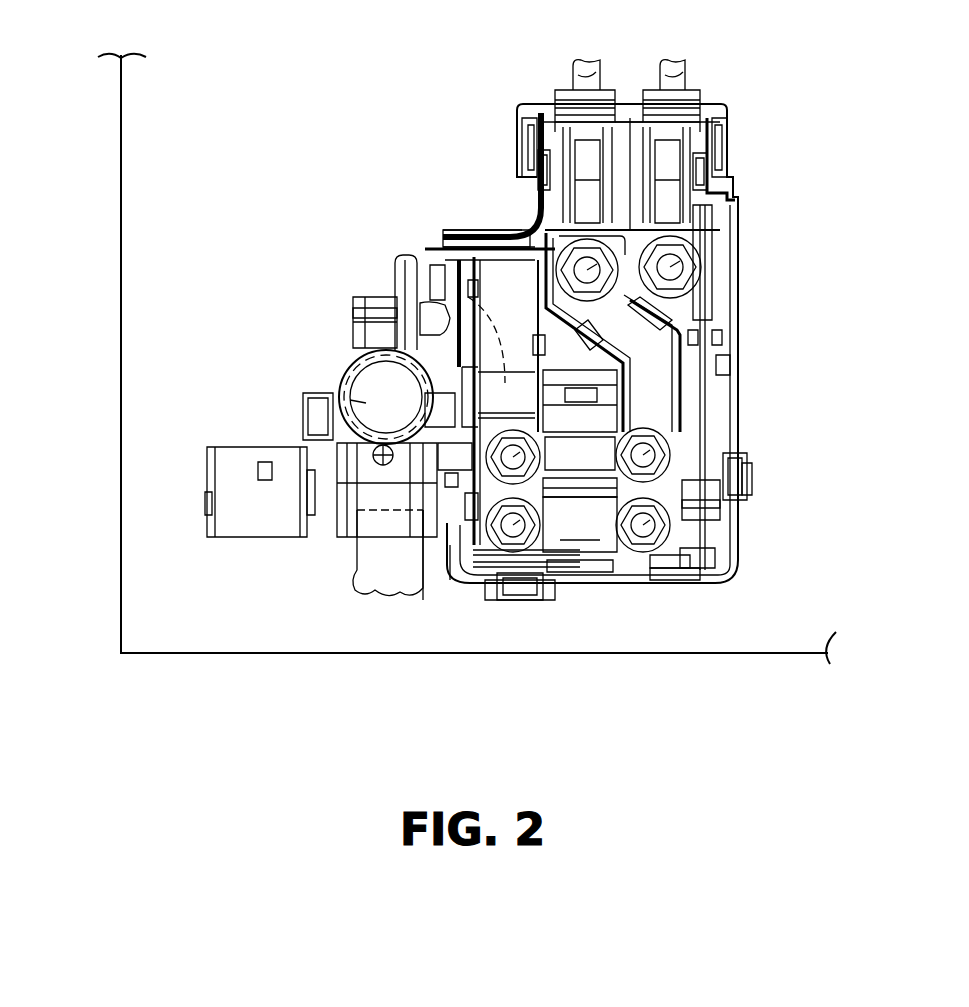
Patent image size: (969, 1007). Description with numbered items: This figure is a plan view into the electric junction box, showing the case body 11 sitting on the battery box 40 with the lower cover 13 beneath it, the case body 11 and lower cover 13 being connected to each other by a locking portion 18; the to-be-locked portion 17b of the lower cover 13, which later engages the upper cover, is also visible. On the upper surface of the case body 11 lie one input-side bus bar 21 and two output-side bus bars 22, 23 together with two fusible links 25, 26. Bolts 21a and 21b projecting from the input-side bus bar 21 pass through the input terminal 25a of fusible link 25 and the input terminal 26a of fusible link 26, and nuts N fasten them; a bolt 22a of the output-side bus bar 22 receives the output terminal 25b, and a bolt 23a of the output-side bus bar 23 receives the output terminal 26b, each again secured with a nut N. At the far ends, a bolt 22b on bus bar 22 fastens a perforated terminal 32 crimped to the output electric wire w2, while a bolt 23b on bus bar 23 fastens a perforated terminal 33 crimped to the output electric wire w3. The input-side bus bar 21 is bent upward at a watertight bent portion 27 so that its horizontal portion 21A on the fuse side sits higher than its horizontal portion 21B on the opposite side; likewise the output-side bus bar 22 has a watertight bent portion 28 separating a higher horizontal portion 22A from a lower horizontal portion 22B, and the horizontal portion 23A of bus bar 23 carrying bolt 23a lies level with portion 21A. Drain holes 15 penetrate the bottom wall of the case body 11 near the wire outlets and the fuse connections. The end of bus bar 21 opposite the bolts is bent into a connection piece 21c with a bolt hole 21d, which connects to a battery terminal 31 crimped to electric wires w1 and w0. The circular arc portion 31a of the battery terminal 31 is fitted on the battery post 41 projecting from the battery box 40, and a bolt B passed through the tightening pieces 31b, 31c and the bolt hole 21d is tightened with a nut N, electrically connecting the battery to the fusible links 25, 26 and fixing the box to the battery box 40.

The case body 11 is at (738, 215).
The lower cover 13 is at (741, 195).
The drain hole 15 is at (562, 125).
The to-be-locked portion 17b is at (515, 125).
The locking portion 18 is at (540, 165).
The input-side bus bar 21 is at (440, 240).
The horizontal portion 21A is at (450, 545).
The horizontal portion 21B is at (478, 255).
The bolt 21a is at (490, 545).
The bolt 21b is at (510, 600).
The connection piece 21c is at (393, 283).
The bolt hole 21d is at (352, 307).
The output-side bus bar 22 is at (700, 307).
The horizontal portion 22A is at (680, 427).
The horizontal portion 22B is at (710, 330).
The bolt 22a is at (750, 477).
The bolt 22b is at (565, 262).
The output-side bus bar 23 is at (698, 282).
The horizontal portion 23A is at (690, 507).
The bolt 23a is at (730, 565).
The bolt 23b is at (738, 235).
The fusible link 25 is at (622, 400).
The input terminal 25a is at (598, 556).
The output terminal 25b is at (700, 430).
The fusible link 26 is at (640, 547).
The input terminal 26a is at (560, 540).
The output terminal 26b is at (690, 560).
The watertight bent portion 27 is at (435, 285).
The watertight bent portion 28 is at (713, 367).
The battery terminal 31 is at (338, 367).
The circular arc portion 31a is at (363, 403).
The tightening piece 31b is at (348, 315).
The tightening piece 31c is at (420, 318).
The perforated terminal 32 is at (538, 197).
The perforated terminal 33 is at (733, 192).
The battery box 40 is at (162, 535).
The battery post 41 is at (337, 398).
The bolt B is at (432, 348).
The nut N is at (583, 268).
The electric wire w0 is at (357, 530).
The electric wire w1 is at (360, 520).
The output electric wire w2 is at (595, 72).
The output electric wire w3 is at (683, 72).